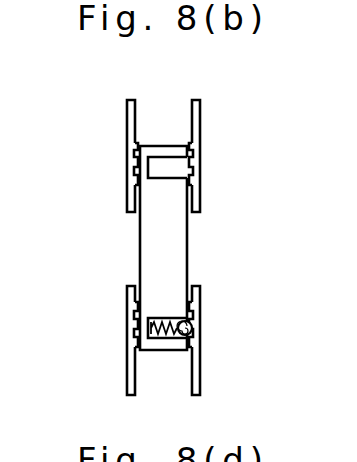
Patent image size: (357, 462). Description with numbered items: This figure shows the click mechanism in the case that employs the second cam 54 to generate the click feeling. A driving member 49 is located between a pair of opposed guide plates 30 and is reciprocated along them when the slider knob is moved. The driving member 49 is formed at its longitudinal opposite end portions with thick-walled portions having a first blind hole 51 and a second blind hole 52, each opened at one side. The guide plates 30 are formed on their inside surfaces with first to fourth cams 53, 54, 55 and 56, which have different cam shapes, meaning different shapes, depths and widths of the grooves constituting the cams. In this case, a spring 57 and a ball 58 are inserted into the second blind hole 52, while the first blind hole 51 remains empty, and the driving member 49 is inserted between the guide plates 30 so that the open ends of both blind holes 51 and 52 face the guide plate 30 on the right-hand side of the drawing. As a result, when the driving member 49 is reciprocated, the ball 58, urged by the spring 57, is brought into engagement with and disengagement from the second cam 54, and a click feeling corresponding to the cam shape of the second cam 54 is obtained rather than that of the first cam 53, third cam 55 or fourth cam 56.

The guide plates 30 is at (127, 105).
The driving member 49 is at (177, 252).
The first blind hole 51 is at (162, 167).
The second blind hole 52 is at (165, 351).
The first cam 53 is at (198, 165).
The second cam 54 is at (199, 330).
The third cam 55 is at (127, 330).
The fourth cam 56 is at (133, 167).
The spring 57 is at (166, 318).
The ball 58 is at (197, 320).